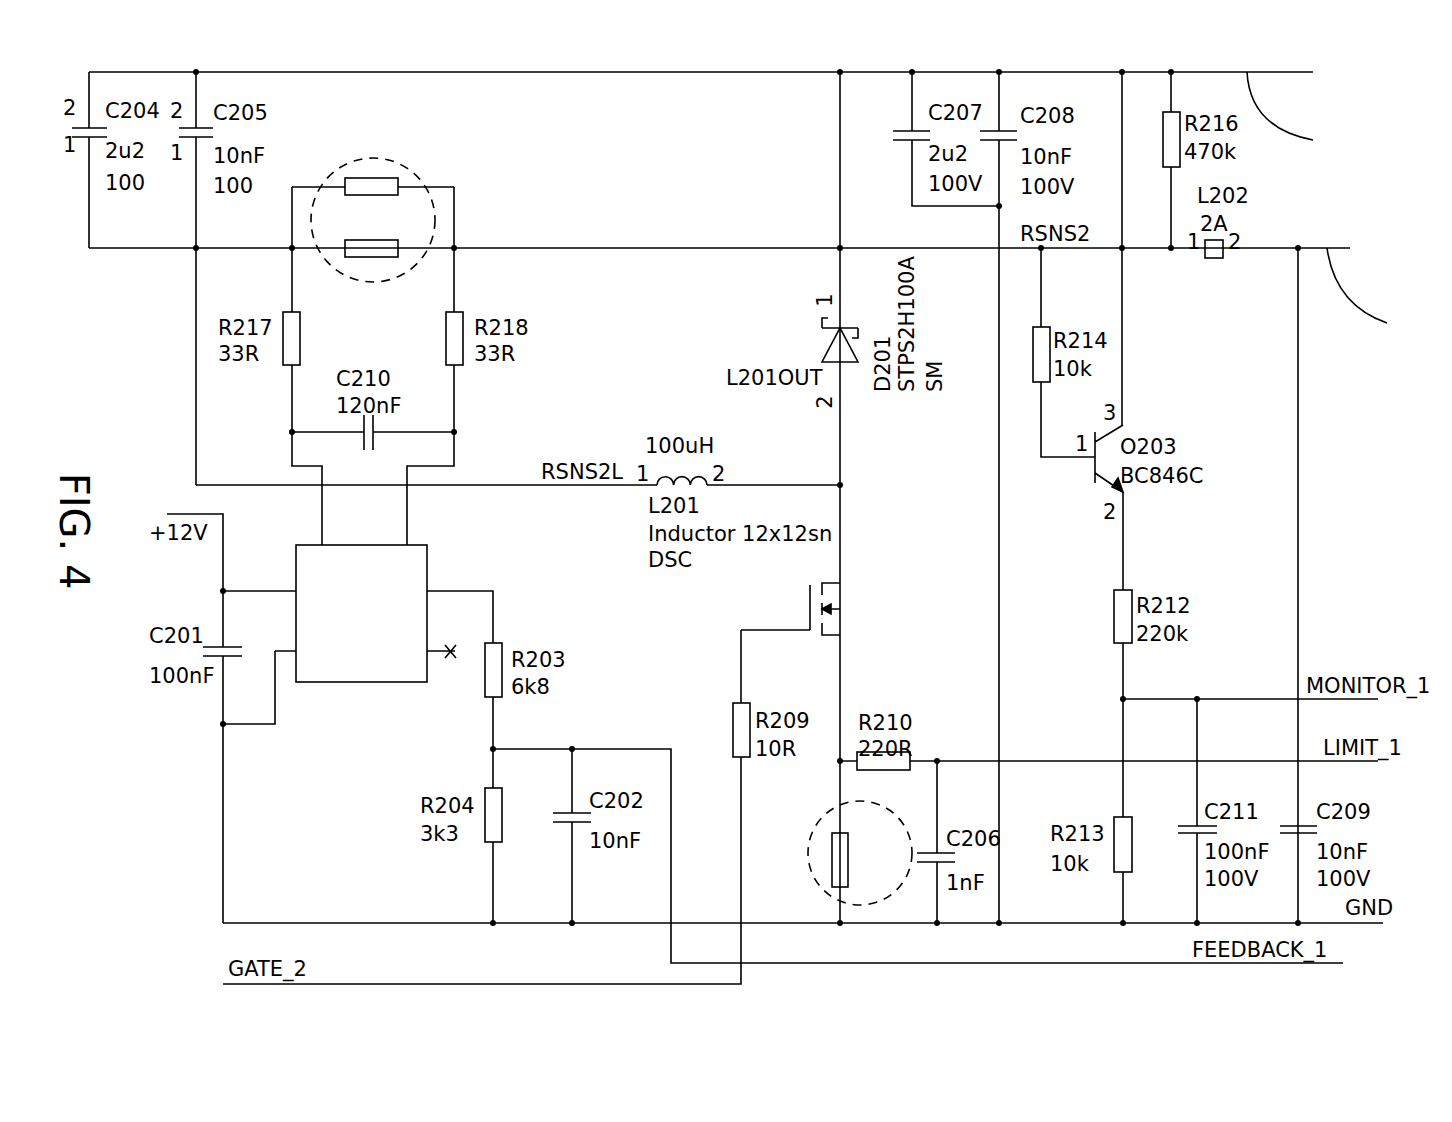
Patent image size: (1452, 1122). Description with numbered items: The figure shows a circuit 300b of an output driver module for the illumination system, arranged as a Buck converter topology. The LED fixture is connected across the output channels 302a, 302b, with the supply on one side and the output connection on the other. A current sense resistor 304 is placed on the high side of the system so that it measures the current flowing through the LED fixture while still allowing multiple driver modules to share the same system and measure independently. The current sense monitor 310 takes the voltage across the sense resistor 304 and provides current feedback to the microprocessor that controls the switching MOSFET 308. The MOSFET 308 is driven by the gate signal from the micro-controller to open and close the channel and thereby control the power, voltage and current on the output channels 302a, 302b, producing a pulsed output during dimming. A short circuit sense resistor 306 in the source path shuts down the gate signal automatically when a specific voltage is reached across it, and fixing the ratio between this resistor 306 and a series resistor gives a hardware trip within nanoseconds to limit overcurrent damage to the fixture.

The output driver module circuit 300b is at (158, 860).
The current sense resistor 304 is at (408, 170).
The current sense monitor 310 is at (363, 660).
The switching MOSFET 308 is at (832, 617).
The short circuit sense resistor 306 is at (808, 842).
The output channel 302a is at (1294, 122).
The output channel 302b is at (1347, 572).